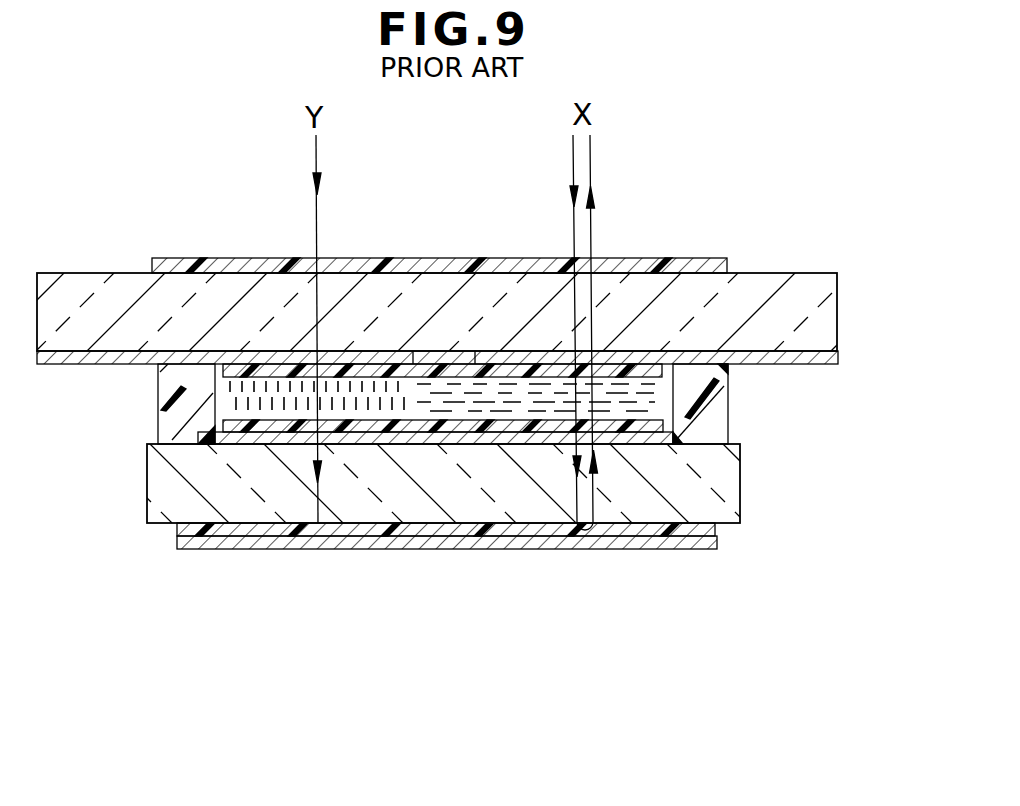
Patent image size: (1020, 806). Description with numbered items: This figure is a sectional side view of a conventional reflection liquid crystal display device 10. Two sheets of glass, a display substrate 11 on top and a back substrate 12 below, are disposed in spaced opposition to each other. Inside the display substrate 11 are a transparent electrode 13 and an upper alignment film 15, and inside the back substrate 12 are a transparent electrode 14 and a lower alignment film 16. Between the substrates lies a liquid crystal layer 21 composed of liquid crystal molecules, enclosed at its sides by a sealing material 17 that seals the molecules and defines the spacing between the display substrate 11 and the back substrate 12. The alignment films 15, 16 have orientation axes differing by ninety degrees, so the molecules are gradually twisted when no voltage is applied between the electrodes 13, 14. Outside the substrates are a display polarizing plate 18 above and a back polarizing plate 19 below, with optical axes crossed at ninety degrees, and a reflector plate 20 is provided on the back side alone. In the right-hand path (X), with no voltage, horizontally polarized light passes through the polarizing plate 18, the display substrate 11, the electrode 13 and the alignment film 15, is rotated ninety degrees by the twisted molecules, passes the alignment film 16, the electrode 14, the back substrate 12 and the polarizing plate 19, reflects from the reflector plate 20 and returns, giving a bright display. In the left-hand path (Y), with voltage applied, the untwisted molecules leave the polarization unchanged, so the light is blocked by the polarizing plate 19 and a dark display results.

The liquid crystal display device 10 is at (714, 238).
The display substrate 11 is at (820, 305).
The back substrate 12 is at (725, 498).
The transparent electrode 13 is at (838, 354).
The transparent electrode 14 is at (622, 441).
The alignment film 15 is at (723, 373).
The alignment film 16 is at (730, 417).
The sealing material 17 is at (157, 415).
The polarizing plate 18 is at (732, 258).
The polarizing plate 19 is at (715, 527).
The reflector plate 20 is at (718, 540).
The liquid crystal layer 21 is at (225, 389).